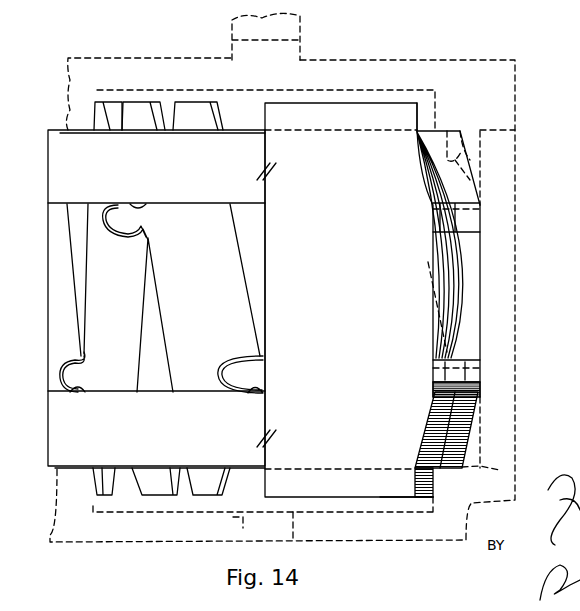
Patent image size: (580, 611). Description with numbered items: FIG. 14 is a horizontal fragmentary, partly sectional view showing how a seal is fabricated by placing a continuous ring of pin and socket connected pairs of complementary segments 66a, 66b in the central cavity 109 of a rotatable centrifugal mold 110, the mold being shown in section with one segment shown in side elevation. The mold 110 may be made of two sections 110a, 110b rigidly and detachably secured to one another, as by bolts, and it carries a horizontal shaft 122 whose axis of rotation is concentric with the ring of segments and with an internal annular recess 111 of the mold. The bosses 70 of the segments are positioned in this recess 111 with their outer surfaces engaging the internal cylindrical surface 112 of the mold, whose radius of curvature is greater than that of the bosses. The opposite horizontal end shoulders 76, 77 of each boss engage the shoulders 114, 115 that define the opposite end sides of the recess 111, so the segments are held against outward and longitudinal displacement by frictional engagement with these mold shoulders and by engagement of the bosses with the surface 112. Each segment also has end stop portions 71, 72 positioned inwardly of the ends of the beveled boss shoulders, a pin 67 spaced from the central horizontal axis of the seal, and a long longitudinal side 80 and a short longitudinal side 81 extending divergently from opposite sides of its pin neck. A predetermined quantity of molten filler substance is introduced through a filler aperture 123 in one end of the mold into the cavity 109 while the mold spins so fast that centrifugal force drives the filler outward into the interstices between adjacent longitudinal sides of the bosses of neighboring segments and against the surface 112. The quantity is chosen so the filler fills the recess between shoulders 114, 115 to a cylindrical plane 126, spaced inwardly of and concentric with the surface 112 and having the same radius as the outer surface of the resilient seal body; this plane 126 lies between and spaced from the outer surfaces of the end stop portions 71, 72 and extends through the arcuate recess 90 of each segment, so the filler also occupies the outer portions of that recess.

The complementary segment 66a is at (110, 297).
The complementary segment 66b is at (200, 297).
The pin 67 is at (472, 373).
The boss 70 is at (472, 322).
The end portion 71 is at (417, 113).
The end portion 72 is at (415, 483).
The end shoulder 76 is at (457, 130).
The end shoulder 77 is at (446, 470).
The long longitudinal side 80 is at (470, 223).
The short longitudinal side 81 is at (462, 440).
The arcuate recess 90 is at (349, 300).
The central cavity 109 is at (365, 505).
The rotatable mold 110 is at (515, 402).
The mold section 110a is at (550, 222).
The mold section 110b is at (556, 456).
The internal annular recess 111 is at (455, 140).
The internal cylindrical surface 112 is at (465, 150).
The shoulder 114 is at (338, 131).
The shoulder 115 is at (292, 470).
The horizontal shaft 122 is at (300, 25).
The filler aperture 123 is at (233, 522).
The cylindrical plane 126 is at (470, 180).